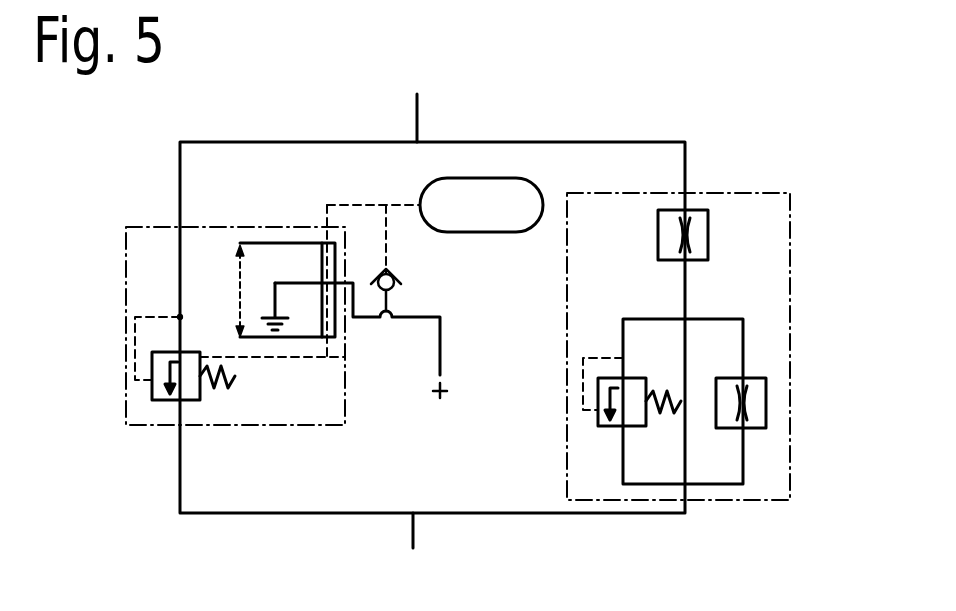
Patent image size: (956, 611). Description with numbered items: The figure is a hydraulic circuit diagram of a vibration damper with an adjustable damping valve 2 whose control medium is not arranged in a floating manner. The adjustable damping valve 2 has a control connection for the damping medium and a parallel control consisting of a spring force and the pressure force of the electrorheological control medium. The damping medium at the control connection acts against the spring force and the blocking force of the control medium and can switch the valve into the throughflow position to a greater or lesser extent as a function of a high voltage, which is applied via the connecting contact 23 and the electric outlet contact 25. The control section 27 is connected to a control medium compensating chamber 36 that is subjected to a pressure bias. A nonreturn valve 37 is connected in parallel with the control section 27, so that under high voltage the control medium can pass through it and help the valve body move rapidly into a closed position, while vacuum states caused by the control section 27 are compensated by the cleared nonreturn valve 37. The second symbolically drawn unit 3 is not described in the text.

The adjustable damping valve 2 is at (181, 315).
The second pressure control unit 3 is at (793, 376).
The connecting contact 23 is at (286, 324).
The electric outlet contact 25 is at (444, 398).
The control section 27 is at (238, 292).
The control medium compensating chamber 36 is at (532, 197).
The nonreturn valve 37 is at (397, 283).